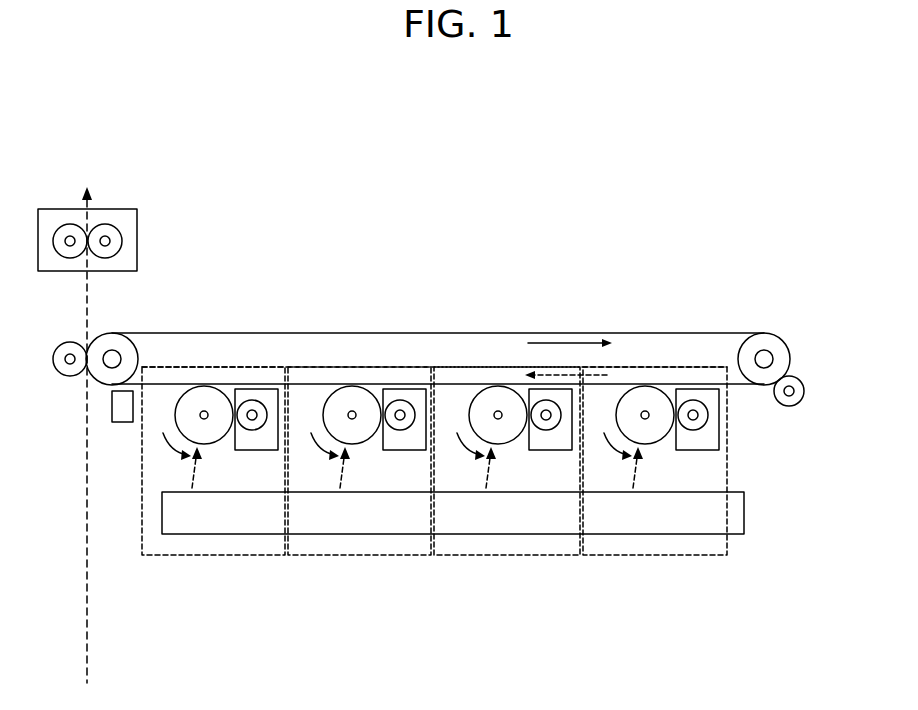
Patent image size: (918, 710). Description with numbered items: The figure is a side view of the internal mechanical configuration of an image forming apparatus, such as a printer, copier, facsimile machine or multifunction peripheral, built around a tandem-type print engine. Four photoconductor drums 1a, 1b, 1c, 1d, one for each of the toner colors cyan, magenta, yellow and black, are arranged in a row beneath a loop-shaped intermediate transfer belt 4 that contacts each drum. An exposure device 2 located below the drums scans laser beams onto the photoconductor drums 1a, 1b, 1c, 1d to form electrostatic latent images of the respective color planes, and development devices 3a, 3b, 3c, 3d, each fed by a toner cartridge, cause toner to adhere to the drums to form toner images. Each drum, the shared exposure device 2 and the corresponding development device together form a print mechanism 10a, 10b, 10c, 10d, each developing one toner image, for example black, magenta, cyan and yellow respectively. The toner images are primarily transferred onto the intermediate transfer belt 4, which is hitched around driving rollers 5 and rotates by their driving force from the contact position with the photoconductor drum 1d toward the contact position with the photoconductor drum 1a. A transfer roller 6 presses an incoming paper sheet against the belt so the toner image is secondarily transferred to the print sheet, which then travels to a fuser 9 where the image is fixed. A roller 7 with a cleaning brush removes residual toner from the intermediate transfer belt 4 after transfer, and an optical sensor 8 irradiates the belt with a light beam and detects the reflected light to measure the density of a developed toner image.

The photoconductor drum 1a is at (624, 391).
The photoconductor drum 1b is at (477, 391).
The photoconductor drum 1c is at (331, 391).
The photoconductor drum 1d is at (183, 391).
The exposure device 2 is at (744, 506).
The development device 3a is at (691, 450).
The development device 3b is at (544, 450).
The development device 3c is at (398, 450).
The development device 3d is at (250, 450).
The intermediate transfer belt 4 is at (383, 333).
The driving roller 5 is at (123, 337).
The transfer roller 6 is at (60, 345).
The roller 7 is at (794, 405).
The sensor 8 is at (122, 422).
The fuser 9 is at (138, 238).
The print mechanism 10a is at (651, 556).
The print mechanism 10b is at (503, 556).
The print mechanism 10c is at (355, 556).
The print mechanism 10d is at (209, 556).